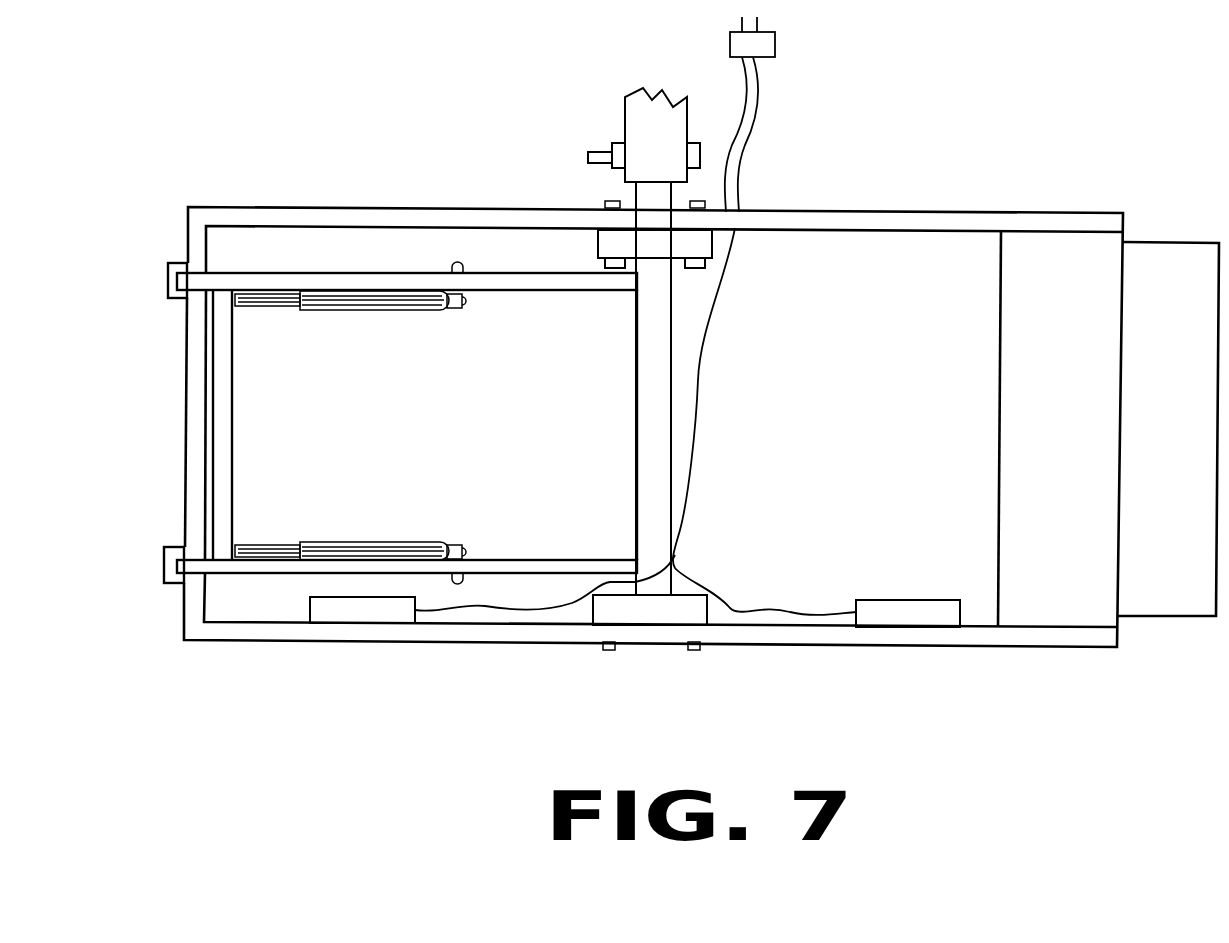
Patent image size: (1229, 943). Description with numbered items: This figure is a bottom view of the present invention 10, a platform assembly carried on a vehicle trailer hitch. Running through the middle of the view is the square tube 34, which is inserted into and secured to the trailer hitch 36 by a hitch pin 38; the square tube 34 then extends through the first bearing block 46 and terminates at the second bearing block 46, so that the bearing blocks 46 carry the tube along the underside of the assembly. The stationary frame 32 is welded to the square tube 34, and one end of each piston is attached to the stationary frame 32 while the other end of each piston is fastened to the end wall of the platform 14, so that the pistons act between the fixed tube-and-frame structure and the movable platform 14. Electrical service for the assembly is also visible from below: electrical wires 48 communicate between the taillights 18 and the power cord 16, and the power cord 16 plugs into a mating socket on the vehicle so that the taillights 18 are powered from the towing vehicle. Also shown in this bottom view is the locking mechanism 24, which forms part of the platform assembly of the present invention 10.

The present invention 10 is at (1018, 192).
The platform 14 is at (185, 243).
The power cord 16 is at (757, 90).
The taillights 18 is at (905, 622).
The locking mechanism 24 is at (185, 283).
The stationary frame 32 is at (363, 567).
The square tube 34 is at (660, 203).
The trailer hitch 36 is at (665, 133).
The hitch pin 38 is at (600, 155).
The bearing block 46 is at (683, 608).
The electrical wires 48 is at (730, 605).